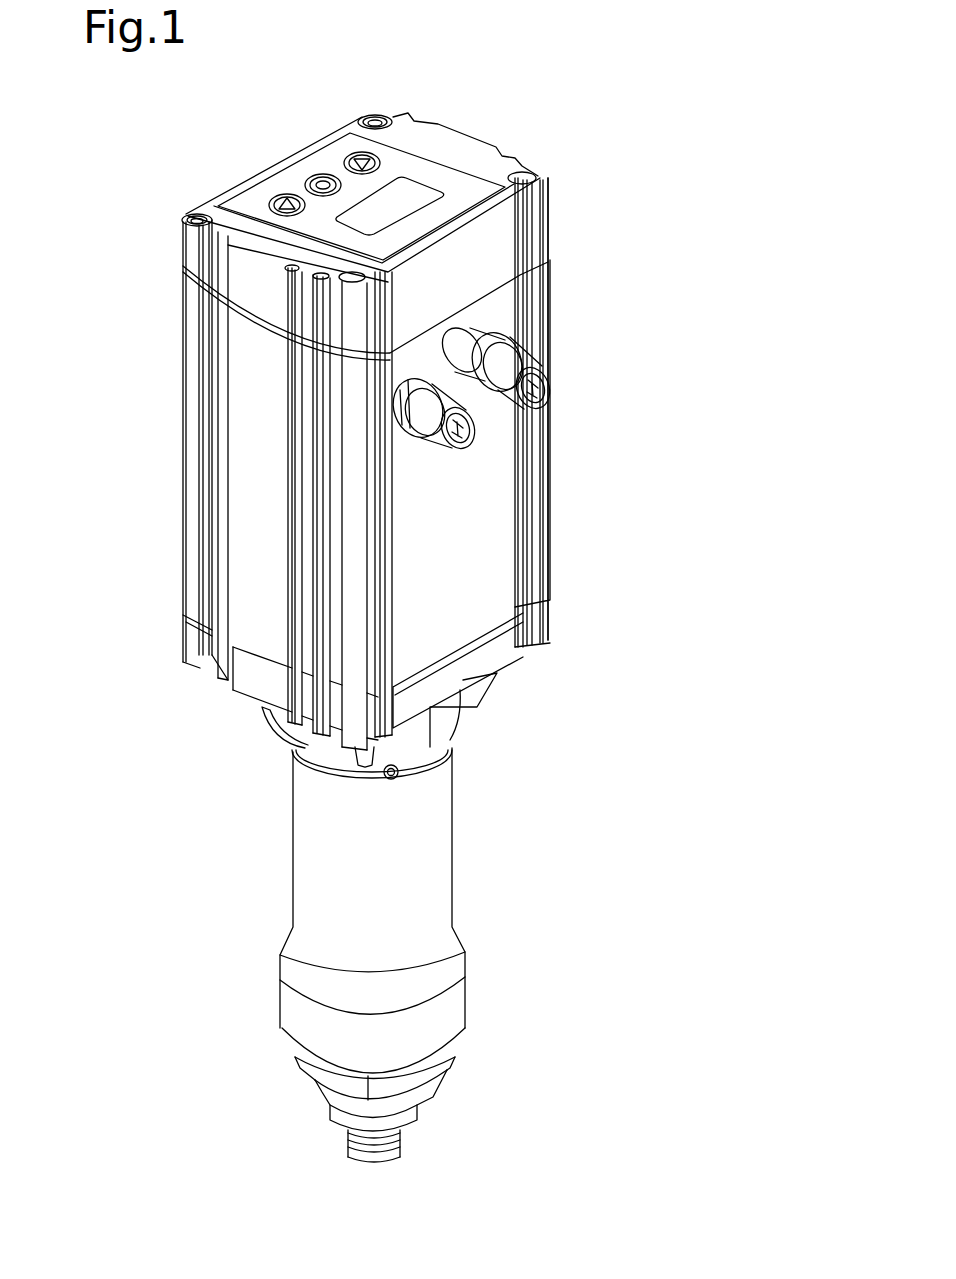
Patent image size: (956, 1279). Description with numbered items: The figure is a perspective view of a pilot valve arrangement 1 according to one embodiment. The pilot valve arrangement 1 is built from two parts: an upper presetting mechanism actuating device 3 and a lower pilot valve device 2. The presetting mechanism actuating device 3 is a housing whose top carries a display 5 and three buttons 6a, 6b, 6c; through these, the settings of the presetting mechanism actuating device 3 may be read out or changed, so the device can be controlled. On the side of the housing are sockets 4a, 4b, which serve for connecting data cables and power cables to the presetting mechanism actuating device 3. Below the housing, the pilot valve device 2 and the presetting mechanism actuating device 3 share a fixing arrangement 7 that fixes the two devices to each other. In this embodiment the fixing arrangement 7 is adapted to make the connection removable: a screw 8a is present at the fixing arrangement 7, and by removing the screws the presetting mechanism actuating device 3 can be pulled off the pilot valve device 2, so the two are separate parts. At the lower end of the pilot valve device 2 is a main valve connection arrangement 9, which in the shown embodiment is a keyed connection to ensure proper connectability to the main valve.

The pilot valve arrangement 1 is at (628, 70).
The pilot valve device 2 is at (410, 883).
The presetting mechanism actuating device 3 is at (488, 548).
The socket 4a is at (523, 373).
The socket 4b is at (473, 432).
The display 5 is at (403, 193).
The button 6a is at (283, 197).
The button 6b is at (320, 183).
The button 6c is at (360, 163).
The fixing arrangement 7 is at (452, 747).
The screw 8a is at (388, 775).
The main valve connection arrangement 9 is at (398, 1113).